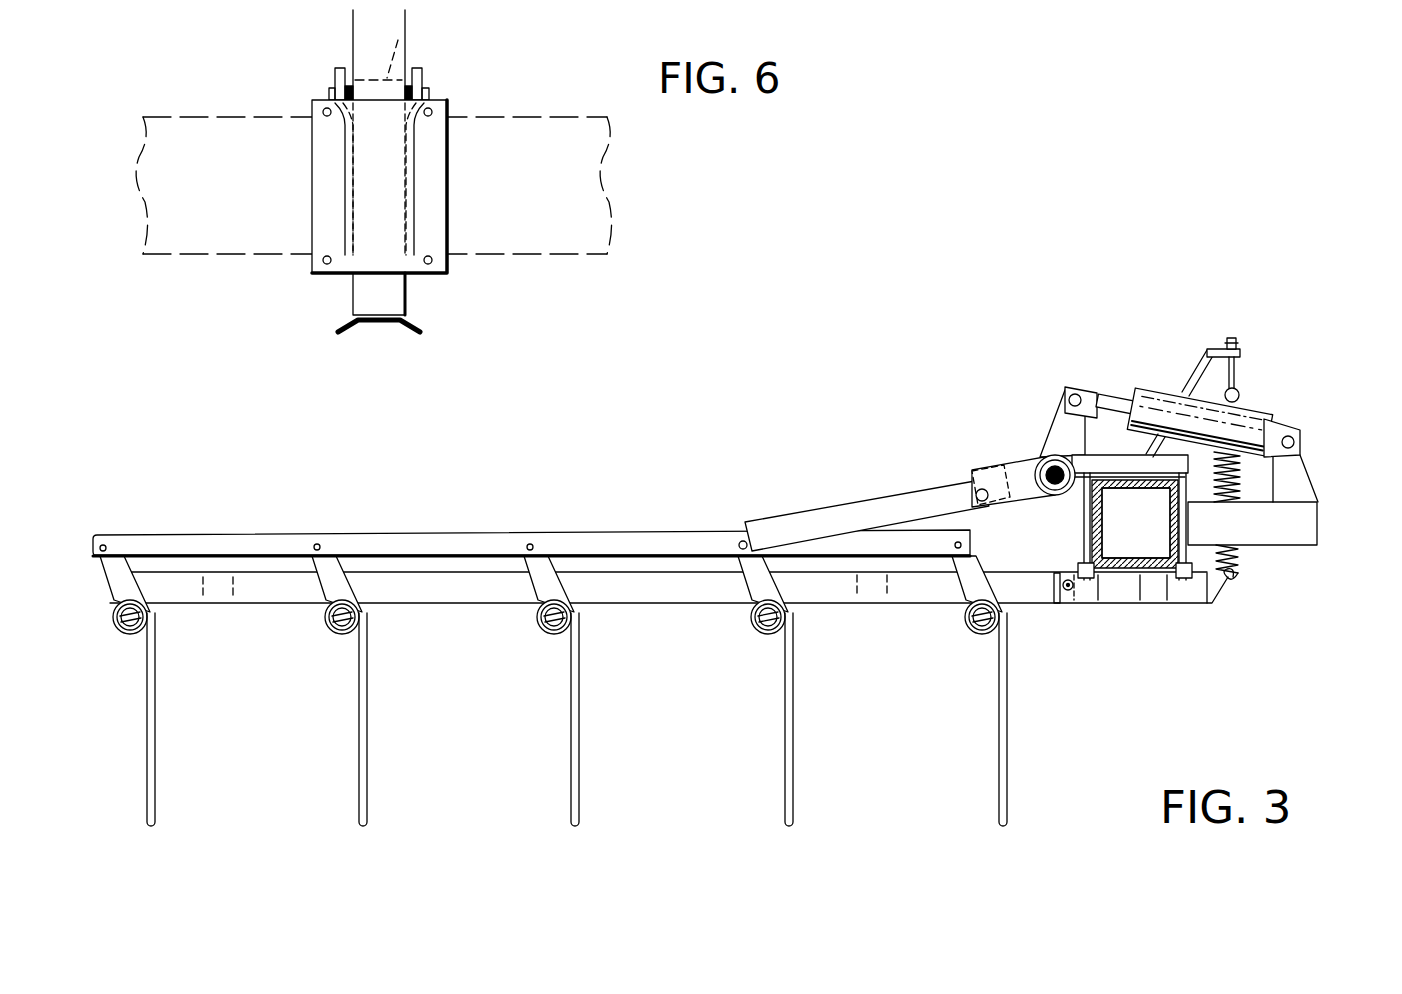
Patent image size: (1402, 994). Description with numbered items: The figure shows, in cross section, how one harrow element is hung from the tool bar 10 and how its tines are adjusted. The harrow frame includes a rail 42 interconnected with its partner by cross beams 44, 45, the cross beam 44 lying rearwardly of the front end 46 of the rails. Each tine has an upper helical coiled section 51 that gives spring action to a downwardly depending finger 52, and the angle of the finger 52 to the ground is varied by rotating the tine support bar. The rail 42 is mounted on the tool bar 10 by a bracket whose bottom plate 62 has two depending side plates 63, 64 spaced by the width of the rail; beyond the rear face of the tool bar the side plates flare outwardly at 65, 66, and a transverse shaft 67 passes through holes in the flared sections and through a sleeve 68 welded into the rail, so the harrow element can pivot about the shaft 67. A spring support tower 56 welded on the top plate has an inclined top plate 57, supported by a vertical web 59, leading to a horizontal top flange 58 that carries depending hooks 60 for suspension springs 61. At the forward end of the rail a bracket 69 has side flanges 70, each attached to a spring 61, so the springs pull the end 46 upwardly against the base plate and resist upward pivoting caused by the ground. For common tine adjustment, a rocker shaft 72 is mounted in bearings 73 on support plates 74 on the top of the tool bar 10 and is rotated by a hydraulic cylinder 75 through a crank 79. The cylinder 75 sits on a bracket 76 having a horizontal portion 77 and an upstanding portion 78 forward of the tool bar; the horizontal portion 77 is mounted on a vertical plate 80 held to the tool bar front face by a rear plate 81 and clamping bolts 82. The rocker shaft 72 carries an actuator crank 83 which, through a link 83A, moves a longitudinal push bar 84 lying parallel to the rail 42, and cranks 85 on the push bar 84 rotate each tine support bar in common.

In FIG. 6, the tool bar 10 is at (212, 117).
In FIG. 3, the tool bar 10 is at (1090, 510).
In FIG. 3, the rail 42 is at (658, 592).
In FIG. 3, the cross beam 44 is at (873, 592).
In FIG. 3, the cross beam 45 is at (218, 597).
In FIG. 6, the front end 46 is at (367, 287).
In FIG. 3, the front end 46 is at (1198, 592).
In FIG. 3, the helical coiled section 51 is at (775, 636).
In FIG. 3, the finger 52 is at (795, 757).
In FIG. 3, the spring support tower 56 is at (1200, 343).
In FIG. 3, the inclined top plate 57 is at (1180, 385).
In FIG. 3, the horizontal top flange 58 is at (1213, 342).
In FIG. 3, the vertical web 59 is at (1207, 382).
In FIG. 3, the depending hook 60 is at (1237, 377).
In FIG. 3, the suspension spring 61 is at (1240, 483).
In FIG. 6, the bottom plate 62 is at (432, 163).
In FIG. 6, the side plate 63 is at (340, 190).
In FIG. 6, the side plate 64 is at (421, 211).
In FIG. 3, the side plate 64 is at (1128, 593).
In FIG. 6, the flared section 65 is at (337, 68).
In FIG. 6, the flared section 66 is at (413, 68).
In FIG. 3, the flared section 66 is at (1068, 595).
In FIG. 6, the transverse shaft 67 is at (422, 80).
In FIG. 3, the transverse shaft 67 is at (1073, 573).
In FIG. 6, the sleeve 68 is at (398, 40).
In FIG. 6, the bracket 69 is at (382, 325).
In FIG. 6, the side flange 70 is at (338, 325).
In FIG. 3, the side flange 70 is at (1223, 590).
In FIG. 3, the rocker shaft 72 is at (1052, 473).
In FIG. 3, the bearing 73 is at (1028, 477).
In FIG. 3, the support plate 74 is at (1113, 462).
In FIG. 3, the hydraulic cylinder 75 is at (1250, 413).
In FIG. 3, the bracket 76 is at (1312, 433).
In FIG. 3, the horizontal portion 77 is at (1305, 535).
In FIG. 3, the upstanding portion 78 is at (1298, 467).
In FIG. 3, the crank 79 is at (1058, 437).
In FIG. 3, the vertical plate 80 is at (1168, 515).
In FIG. 3, the rear plate 81 is at (1102, 543).
In FIG. 3, the clamping bolt 82 is at (1145, 580).
In FIG. 3, the actuator crank 83 is at (988, 481).
In FIG. 3, the link 83A is at (888, 507).
In FIG. 3, the push bar 84 is at (467, 540).
In FIG. 3, the crank 85 is at (535, 585).